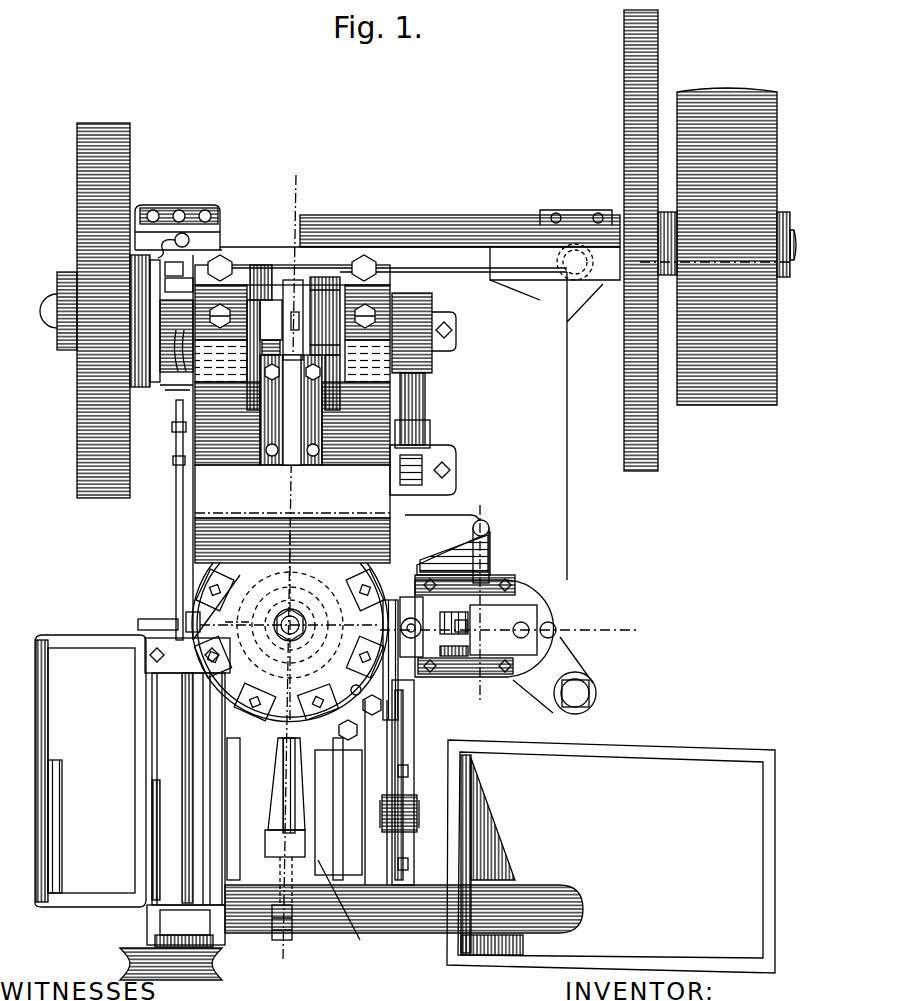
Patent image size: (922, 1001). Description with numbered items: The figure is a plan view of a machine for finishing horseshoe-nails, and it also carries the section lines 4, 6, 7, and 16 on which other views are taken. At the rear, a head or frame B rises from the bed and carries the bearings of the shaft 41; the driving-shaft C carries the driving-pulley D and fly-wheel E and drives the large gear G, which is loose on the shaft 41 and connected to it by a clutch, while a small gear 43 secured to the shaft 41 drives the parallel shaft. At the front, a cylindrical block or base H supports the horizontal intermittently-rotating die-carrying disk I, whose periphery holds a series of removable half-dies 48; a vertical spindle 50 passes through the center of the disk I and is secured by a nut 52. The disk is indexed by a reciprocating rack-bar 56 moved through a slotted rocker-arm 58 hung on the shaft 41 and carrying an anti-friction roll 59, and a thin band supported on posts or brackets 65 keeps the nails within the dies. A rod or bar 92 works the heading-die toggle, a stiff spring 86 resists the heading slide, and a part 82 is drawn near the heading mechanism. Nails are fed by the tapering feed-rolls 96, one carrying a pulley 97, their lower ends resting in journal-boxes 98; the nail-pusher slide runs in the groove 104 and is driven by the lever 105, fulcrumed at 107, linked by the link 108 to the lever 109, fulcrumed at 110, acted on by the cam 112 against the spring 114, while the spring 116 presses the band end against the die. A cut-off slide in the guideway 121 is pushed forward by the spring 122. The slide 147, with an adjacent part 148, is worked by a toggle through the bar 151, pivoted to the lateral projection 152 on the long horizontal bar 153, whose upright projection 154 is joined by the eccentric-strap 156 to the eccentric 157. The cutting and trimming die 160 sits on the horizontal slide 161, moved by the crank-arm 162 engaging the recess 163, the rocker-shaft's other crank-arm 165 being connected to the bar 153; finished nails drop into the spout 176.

The section line 4 4 is at (288, 569).
The section line 6 6 is at (430, 628).
The section line 7 7 is at (477, 602).
The section line 16 16 is at (52, 312).
The shaft 41 is at (172, 313).
The small gear 43 is at (327, 278).
The half-dies 48 is at (382, 705).
The vertical spindle 50 is at (297, 616).
The nut 52 is at (277, 642).
The reciprocating rack-bar 56 is at (256, 262).
The slotted rocker-arm 58 is at (273, 272).
The anti-friction roll 59 is at (294, 625).
The posts or brackets 65 is at (360, 730).
The bar 82 is at (288, 268).
The stiff spring 86 is at (308, 270).
The rod or bar 92 is at (287, 455).
The feed-rolls 96 is at (200, 750).
The pulley 97 is at (118, 950).
The journal-boxes 98 is at (200, 673).
The groove 104 is at (188, 614).
The lever 105 is at (177, 568).
The fulcrum 107 is at (177, 462).
The link 108 is at (178, 430).
The lever 109 is at (140, 278).
The fulcrum 110 is at (158, 383).
The cam 112 is at (152, 292).
The spring 114 is at (182, 232).
The spring 116 is at (195, 580).
The guideway 121 is at (275, 750).
The spring 122 is at (142, 628).
The slide 147 is at (489, 647).
The block 148 is at (466, 636).
The bar 151 is at (488, 556).
The lateral projection 152 is at (447, 545).
The long horizontal bar 153 is at (408, 758).
The upright projection 154 is at (418, 425).
The eccentric-strap 156 is at (420, 360).
The eccentric 157 is at (432, 307).
The cutting and trimming die 160 is at (290, 743).
The horizontal slide 161 is at (351, 909).
The crank-arm 162 is at (262, 940).
The recess 163 is at (281, 640).
The crank-arm 165 is at (422, 834).
The spout 176 is at (312, 920).
The head or frame B is at (292, 409).
The driving-shaft C is at (425, 228).
The driving-pulley D is at (730, 97).
The fly-wheel E is at (623, 108).
The large gear G is at (136, 170).
The cylindrical block or base H is at (398, 447).
The die-carrying disk I is at (290, 626).